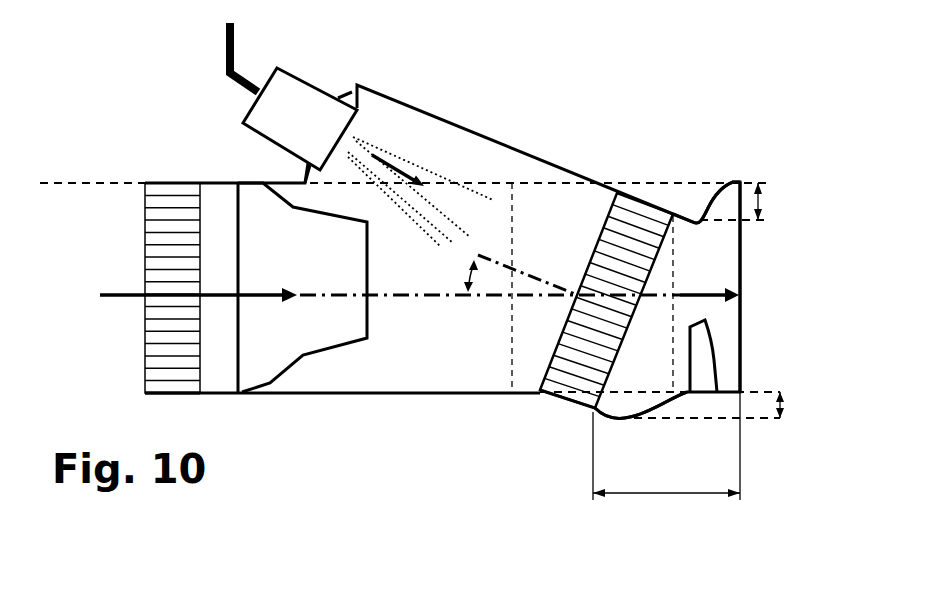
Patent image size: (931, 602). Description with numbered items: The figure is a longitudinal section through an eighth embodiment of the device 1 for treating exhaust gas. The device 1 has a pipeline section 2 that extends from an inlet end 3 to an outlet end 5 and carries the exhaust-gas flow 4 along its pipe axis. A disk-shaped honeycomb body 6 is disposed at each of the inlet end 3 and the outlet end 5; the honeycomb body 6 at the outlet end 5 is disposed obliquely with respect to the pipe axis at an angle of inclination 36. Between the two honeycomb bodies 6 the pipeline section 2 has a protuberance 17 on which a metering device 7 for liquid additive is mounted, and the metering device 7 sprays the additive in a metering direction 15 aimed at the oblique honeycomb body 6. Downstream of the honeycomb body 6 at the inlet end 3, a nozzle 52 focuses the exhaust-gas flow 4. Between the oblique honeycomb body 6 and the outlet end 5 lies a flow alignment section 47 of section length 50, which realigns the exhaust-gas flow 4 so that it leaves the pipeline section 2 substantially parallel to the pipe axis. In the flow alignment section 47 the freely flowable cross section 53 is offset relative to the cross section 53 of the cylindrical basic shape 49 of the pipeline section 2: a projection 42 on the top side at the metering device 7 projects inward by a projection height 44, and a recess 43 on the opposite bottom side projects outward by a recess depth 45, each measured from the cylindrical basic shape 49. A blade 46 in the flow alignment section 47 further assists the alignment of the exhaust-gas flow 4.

The device 1 is at (86, 58).
The pipeline section 2 is at (370, 394).
The inlet end 3 is at (142, 400).
The exhaust-gas flow 4 is at (118, 292).
The outlet end 5 is at (740, 298).
The honeycomb body 6 is at (178, 205).
The metering device 7 is at (300, 73).
The metering direction 15 is at (392, 150).
The protuberance 17 is at (447, 120).
The angle of inclination 36 is at (470, 277).
The projection 42 is at (693, 217).
The recess 43 is at (623, 420).
The upper offset dimension 44 is at (763, 202).
The projection height / recess depth 45 is at (783, 407).
The blade 46 is at (720, 357).
The flow alignment section 47 is at (588, 471).
The cylindrical basic shape 49 is at (612, 183).
The section length 50 is at (705, 497).
The nozzle 52 is at (310, 355).
The cross section 53 is at (502, 365).